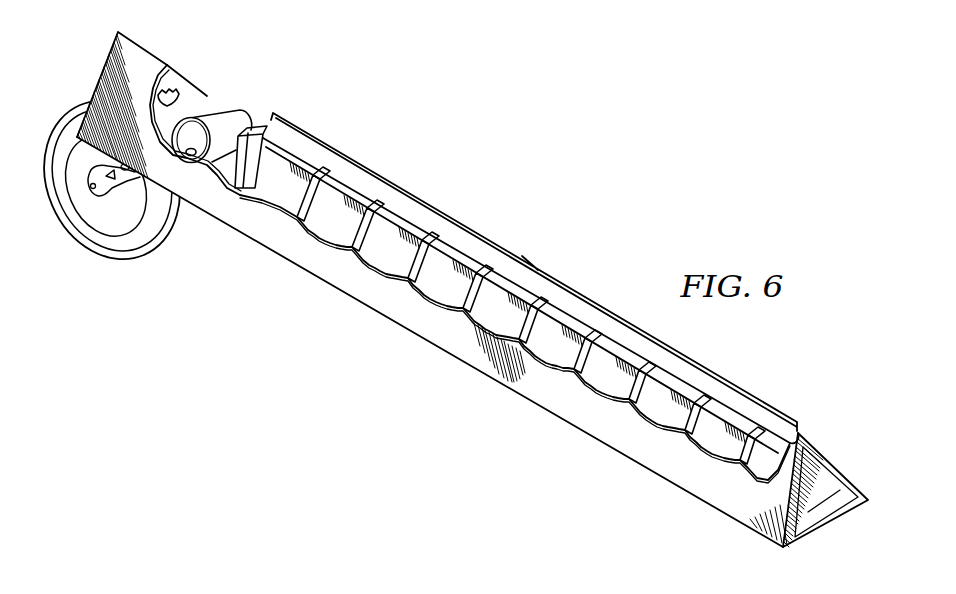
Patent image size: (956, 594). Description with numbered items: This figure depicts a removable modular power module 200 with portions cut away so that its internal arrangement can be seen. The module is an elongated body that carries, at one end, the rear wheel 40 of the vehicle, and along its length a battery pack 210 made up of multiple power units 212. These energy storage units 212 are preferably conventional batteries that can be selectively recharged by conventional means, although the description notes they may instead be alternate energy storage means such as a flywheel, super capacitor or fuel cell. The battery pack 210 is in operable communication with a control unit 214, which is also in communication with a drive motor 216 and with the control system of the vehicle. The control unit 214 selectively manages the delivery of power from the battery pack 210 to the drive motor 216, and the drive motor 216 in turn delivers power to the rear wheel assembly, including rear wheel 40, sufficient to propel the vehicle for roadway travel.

The rear wheel 40 is at (97, 247).
The modular power module 200 is at (404, 335).
The battery pack 210 is at (534, 272).
The power units 212 is at (250, 194).
The control unit 214 is at (256, 128).
The drive motor 216 is at (217, 110).